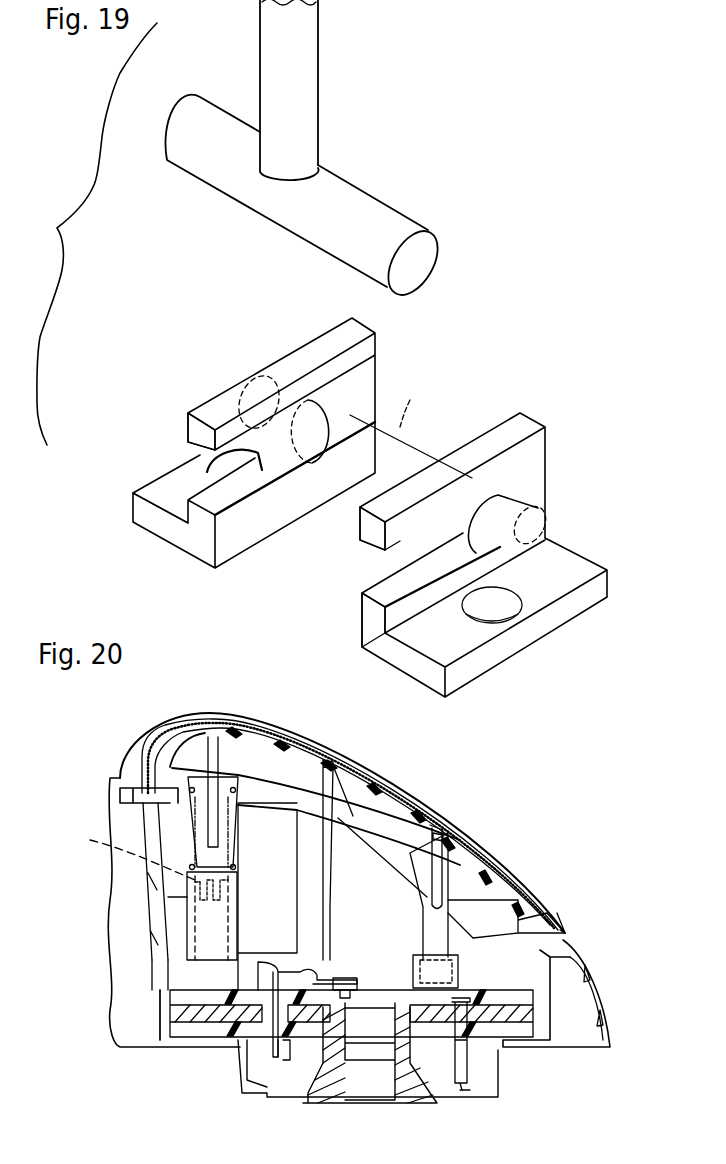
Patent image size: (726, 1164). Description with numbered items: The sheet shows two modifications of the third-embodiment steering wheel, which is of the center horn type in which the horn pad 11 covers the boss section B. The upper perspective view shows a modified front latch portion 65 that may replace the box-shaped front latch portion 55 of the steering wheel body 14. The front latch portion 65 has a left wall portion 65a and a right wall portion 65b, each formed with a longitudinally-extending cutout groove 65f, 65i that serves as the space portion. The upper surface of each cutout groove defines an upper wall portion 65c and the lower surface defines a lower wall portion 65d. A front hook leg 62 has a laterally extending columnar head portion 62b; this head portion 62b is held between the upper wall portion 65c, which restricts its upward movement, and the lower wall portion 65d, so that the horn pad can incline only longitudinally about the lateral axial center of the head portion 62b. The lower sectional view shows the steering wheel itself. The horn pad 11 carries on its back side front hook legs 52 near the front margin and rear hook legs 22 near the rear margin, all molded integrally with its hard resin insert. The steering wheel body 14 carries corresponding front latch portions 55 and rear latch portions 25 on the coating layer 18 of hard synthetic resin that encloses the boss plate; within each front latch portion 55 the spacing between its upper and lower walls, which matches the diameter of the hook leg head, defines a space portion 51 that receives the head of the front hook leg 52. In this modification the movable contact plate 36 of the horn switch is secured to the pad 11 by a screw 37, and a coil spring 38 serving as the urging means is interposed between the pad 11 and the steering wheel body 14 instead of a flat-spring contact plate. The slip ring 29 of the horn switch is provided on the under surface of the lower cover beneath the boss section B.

In FIG. 19, the front hook leg 62 is at (344, 231).
In FIG. 19, the head portion 62b is at (430, 245).
In FIG. 19, the front latch portion 65 is at (223, 352).
In FIG. 19, the left wall portion 65a is at (548, 485).
In FIG. 19, the right wall portion 65b is at (380, 345).
In FIG. 19, the upper wall portion 65c is at (183, 455).
In FIG. 19, the lower wall portion 65d is at (213, 497).
In FIG. 19, the cutout groove 65f is at (292, 433).
In FIG. 19, the cutout groove 65i is at (403, 556).
In FIG. 20, the horn pad 11 is at (408, 782).
In FIG. 20, the steering wheel body 14 is at (142, 1029).
In FIG. 20, the coating layer 18 is at (150, 975).
In FIG. 20, the rear hook legs 22 is at (250, 839).
In FIG. 20, the rear latch portions 25 is at (185, 915).
In FIG. 20, the slip ring 29 is at (295, 1099).
In FIG. 20, the movable contact plate 36 is at (348, 980).
In FIG. 20, the screw 37 is at (258, 962).
In FIG. 20, the coil spring 38 is at (130, 853).
In FIG. 20, the space portion 51 is at (547, 935).
In FIG. 20, the front hook legs 52 is at (414, 911).
In FIG. 20, the front latch portion 55 is at (460, 976).
In FIG. 20, the boss section B is at (458, 1108).